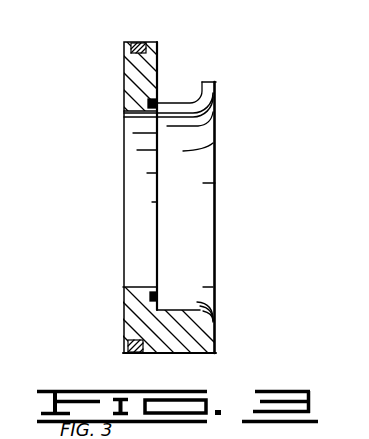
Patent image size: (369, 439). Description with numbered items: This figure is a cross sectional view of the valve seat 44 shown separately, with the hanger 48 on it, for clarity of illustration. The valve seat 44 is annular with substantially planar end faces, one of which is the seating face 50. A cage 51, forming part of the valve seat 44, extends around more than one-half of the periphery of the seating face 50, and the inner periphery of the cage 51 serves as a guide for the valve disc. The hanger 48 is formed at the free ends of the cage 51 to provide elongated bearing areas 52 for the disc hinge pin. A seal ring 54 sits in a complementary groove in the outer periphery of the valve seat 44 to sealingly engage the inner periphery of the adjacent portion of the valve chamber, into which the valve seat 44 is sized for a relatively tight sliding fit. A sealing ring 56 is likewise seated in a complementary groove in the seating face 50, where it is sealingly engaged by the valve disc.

The valve seat 44 is at (130, 322).
The hanger 48 is at (215, 83).
The seating face 50 is at (155, 290).
The cage 51 is at (187, 338).
The elongated bearing areas 52 is at (175, 100).
The seal ring 54 is at (138, 43).
The sealing ring 56 is at (148, 294).